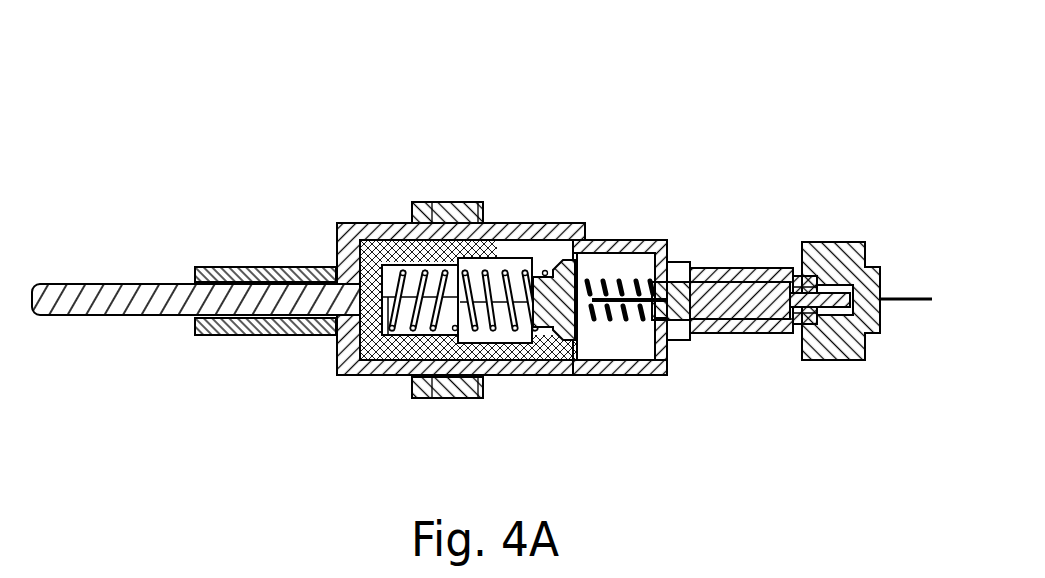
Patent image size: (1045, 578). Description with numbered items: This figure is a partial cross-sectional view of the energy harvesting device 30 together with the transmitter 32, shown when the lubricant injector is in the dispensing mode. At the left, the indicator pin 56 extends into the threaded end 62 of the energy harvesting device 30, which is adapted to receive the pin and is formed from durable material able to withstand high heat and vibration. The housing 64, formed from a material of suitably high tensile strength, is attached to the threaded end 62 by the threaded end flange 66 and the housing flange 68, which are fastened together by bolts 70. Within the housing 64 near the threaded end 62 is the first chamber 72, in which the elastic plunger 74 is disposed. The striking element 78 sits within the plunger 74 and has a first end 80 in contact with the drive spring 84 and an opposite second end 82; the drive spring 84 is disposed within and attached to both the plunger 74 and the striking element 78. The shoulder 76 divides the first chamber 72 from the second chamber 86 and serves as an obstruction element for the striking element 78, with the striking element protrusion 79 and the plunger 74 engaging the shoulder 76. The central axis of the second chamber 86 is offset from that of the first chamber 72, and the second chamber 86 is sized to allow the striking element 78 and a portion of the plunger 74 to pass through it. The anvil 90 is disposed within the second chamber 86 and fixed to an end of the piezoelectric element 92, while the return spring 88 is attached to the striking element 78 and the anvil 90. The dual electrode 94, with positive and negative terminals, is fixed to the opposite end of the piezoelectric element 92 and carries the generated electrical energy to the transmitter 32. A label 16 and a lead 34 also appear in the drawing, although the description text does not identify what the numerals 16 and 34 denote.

The energy harvesting device 30 is at (212, 115).
The end cap 16 is at (595, 240).
The transmitter 32 is at (828, 255).
The lead wire 34 is at (910, 299).
The indicator pin 56 is at (147, 283).
The threaded end 62 is at (233, 265).
The housing 64 is at (550, 223).
The threaded end flange 66 is at (430, 397).
The housing flange 68 is at (465, 397).
The bolts 70 is at (482, 388).
The first chamber 72 is at (509, 263).
The plunger 74 is at (383, 245).
The shoulder 76 is at (487, 203).
The striking element 78 is at (556, 250).
The striking element protrusion 79 is at (580, 335).
The striking element first end 80 is at (535, 342).
The striking element second end 82 is at (595, 312).
The drive spring 84 is at (424, 272).
The second chamber 86 is at (622, 349).
The return spring 88 is at (642, 277).
The anvil 90 is at (687, 277).
The piezoelectric element 92 is at (735, 297).
The dual electrode 94 is at (803, 302).